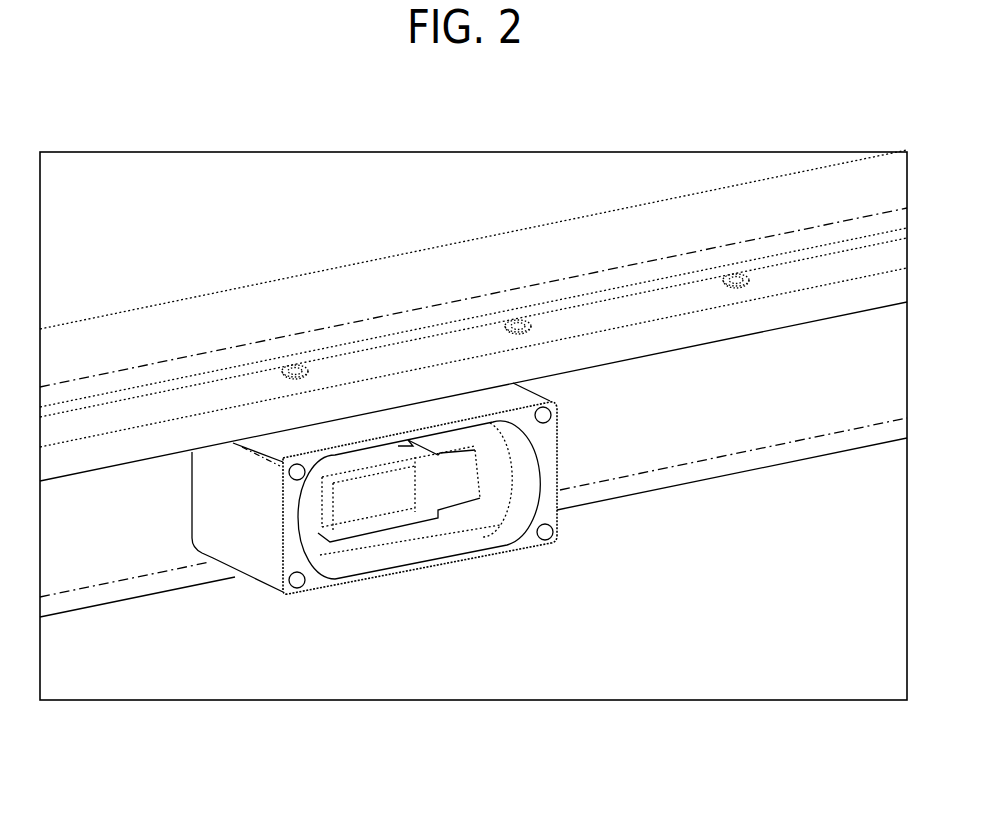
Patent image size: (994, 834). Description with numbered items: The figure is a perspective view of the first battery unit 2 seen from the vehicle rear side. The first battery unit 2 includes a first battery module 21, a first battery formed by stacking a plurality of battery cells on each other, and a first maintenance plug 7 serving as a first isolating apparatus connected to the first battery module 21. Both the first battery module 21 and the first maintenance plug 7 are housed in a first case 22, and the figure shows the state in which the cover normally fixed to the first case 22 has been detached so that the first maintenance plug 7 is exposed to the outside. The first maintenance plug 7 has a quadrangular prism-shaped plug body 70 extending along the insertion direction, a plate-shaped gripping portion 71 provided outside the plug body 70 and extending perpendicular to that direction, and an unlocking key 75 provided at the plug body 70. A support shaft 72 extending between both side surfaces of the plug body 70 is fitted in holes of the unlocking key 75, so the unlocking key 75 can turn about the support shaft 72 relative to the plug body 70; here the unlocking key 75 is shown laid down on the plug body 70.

The first battery unit 2 is at (840, 126).
The first battery module 21 is at (443, 303).
The first case 22 is at (535, 170).
The first maintenance plug 7 is at (402, 425).
The plug body 70 is at (465, 425).
The gripping portion 71 is at (465, 483).
The support shaft 72 is at (403, 452).
The unlocking key 75 is at (322, 527).